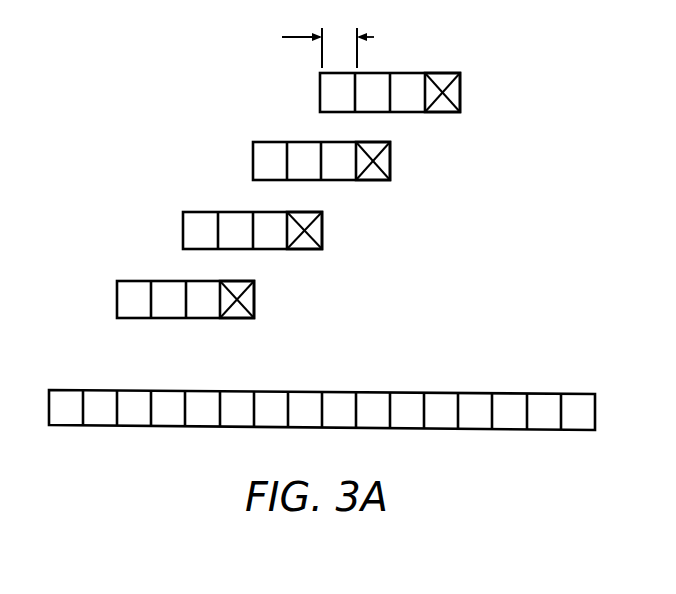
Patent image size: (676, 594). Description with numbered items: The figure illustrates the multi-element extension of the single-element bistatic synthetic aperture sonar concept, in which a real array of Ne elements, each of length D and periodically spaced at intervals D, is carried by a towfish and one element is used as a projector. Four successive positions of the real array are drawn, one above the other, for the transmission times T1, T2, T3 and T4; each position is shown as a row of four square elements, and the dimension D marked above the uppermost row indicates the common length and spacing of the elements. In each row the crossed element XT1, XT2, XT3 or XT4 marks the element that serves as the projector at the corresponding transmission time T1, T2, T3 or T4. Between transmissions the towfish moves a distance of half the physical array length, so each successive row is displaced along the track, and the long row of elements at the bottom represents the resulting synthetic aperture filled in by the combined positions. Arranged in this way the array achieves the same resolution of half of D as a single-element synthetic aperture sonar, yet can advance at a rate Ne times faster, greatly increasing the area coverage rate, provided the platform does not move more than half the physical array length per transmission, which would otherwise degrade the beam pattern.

The element length and spacing D is at (316, 47).
The first transmission time T1 is at (424, 81).
The second transmission time T2 is at (391, 150).
The third transmission time T3 is at (356, 220).
The fourth transmission time T4 is at (323, 288).
The projector element at time T1 XT1 is at (442, 81).
The projector element at time T2 XT2 is at (372, 150).
The projector element at time T3 XT3 is at (304, 220).
The projector element at time T4 XT4 is at (235, 288).